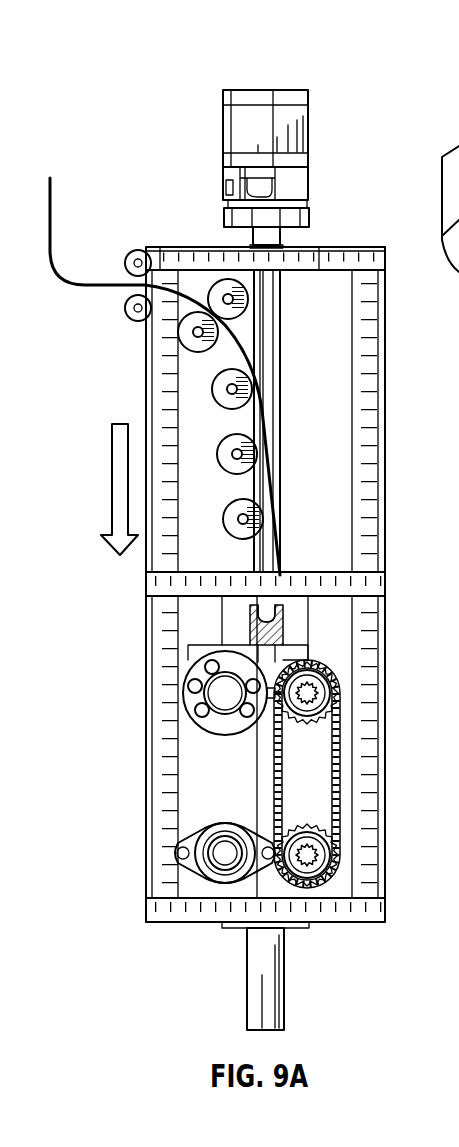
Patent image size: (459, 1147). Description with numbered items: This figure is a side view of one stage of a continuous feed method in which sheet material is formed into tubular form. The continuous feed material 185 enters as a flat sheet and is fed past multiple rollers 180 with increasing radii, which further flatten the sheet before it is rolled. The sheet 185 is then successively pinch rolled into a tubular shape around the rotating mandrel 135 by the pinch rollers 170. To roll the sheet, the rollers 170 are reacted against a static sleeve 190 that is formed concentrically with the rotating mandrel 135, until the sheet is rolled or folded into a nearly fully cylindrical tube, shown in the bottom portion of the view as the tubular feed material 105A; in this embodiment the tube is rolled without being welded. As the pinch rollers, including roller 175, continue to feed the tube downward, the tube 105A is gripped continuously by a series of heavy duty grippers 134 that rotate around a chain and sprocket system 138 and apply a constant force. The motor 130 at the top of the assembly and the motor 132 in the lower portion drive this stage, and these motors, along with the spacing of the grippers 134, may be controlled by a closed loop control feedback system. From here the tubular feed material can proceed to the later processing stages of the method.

The motor 130 is at (258, 86).
The continuous feed material 185 is at (52, 172).
The rollers 180 is at (124, 308).
The pinch rollers 170 is at (213, 392).
The rotating mandrel 135 is at (268, 342).
The static sleeve 190 is at (283, 437).
The roller 175 is at (250, 625).
The motor 132 is at (226, 722).
The grippers 134 is at (340, 787).
The chain and sprocket system 138 is at (331, 888).
The tubular feed material 105A is at (252, 815).